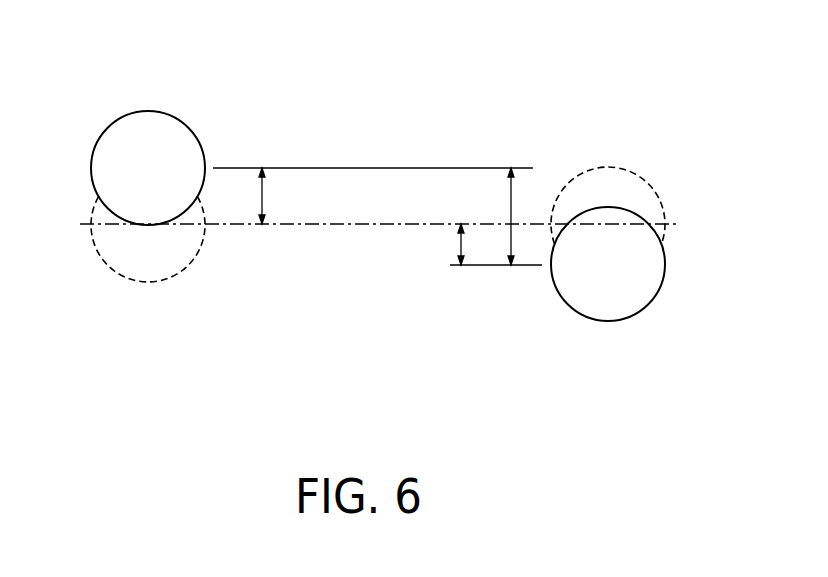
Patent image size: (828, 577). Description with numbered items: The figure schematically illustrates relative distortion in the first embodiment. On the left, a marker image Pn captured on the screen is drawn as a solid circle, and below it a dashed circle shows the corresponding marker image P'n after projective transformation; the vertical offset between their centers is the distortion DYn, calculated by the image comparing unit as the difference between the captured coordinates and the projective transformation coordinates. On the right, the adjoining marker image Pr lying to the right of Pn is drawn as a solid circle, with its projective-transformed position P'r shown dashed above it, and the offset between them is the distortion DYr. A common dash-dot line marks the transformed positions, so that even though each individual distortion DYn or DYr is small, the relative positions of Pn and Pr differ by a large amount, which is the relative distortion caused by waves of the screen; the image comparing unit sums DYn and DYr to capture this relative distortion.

The marker image Pn is at (168, 111).
The marker image after projective transformation P'n is at (148, 274).
The adjoining marker image on the right side Pr is at (585, 321).
The adjoining marker image after projective transformation P'r is at (608, 172).
The vertical distortion of marker image DYn is at (372, 196).
The vertical distortion of adjoining marker image DYr is at (479, 244).